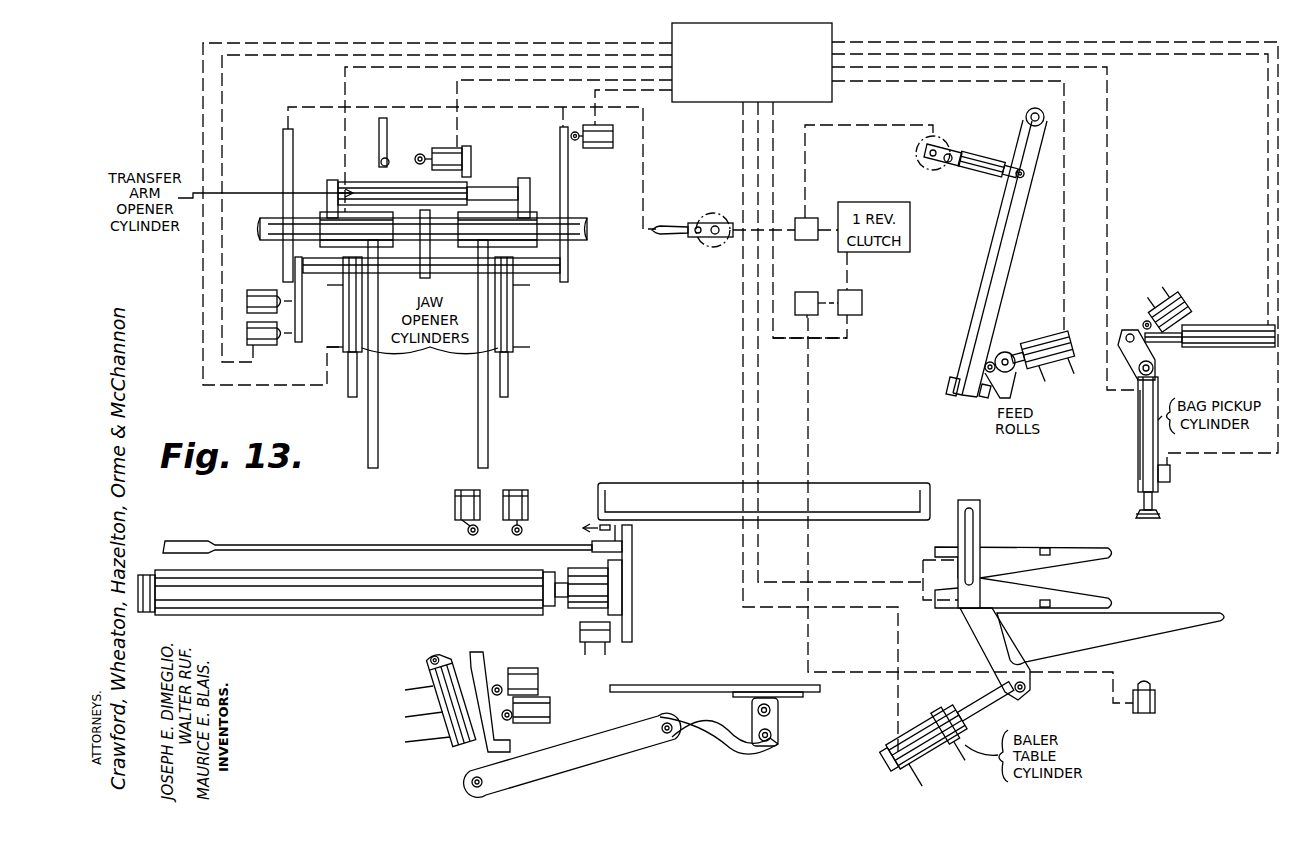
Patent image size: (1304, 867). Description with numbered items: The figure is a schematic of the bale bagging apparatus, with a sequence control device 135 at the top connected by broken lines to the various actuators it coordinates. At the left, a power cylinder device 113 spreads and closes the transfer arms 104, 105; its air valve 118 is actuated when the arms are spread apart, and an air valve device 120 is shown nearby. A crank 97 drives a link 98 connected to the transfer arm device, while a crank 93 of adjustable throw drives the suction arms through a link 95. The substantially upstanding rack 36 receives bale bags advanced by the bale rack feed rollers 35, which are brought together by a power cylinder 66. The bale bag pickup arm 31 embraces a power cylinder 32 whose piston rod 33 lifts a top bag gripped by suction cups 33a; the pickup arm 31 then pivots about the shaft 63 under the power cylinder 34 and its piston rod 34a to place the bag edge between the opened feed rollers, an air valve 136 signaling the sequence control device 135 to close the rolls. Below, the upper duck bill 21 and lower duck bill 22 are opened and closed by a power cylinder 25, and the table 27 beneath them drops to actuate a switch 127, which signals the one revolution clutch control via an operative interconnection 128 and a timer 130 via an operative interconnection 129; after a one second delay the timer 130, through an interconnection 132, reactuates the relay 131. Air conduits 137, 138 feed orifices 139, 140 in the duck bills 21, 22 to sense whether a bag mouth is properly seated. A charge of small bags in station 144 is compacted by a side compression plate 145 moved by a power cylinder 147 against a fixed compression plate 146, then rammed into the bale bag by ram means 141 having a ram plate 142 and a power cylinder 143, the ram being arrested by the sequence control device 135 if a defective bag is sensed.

The sequence control device 135 is at (834, 35).
The power cylinder device 113 is at (355, 178).
The air valve 118 is at (462, 147).
The air valve device 120 is at (615, 181).
The transfer arm 104 is at (378, 433).
The transfer arm 105 is at (488, 433).
The crank 97 is at (718, 232).
The link 98 is at (661, 228).
The timer 130 is at (798, 292).
The relay 131 is at (862, 303).
The interconnection 132 is at (830, 306).
The operative interconnection 128 is at (822, 341).
The operative interconnection 129 is at (810, 634).
The crank 93 is at (946, 149).
The link 95 is at (977, 175).
The rack 36 is at (992, 237).
The bale rack feed rollers 35 is at (1003, 352).
The power cylinder 66 is at (1042, 340).
The power cylinder 34 is at (1228, 325).
The piston rod 34a is at (1172, 346).
The air valve 136 is at (1175, 300).
The shaft 63 is at (1135, 368).
The bale bag pickup arm 31 is at (1136, 433).
The power cylinder 32 is at (1138, 457).
The piston rod 33 is at (1138, 483).
The suction cups 33a is at (1140, 515).
The fixed compression plate 146 is at (690, 514).
The ram means 141 is at (690, 556).
The station 144 is at (730, 576).
The power cylinder 143 is at (333, 618).
The ram plate 142 is at (632, 603).
The side compression plate 145 is at (710, 683).
The power cylinder 147 is at (436, 713).
The upper duck bill 21 is at (1065, 548).
The lower duck bill 22 is at (1087, 592).
The orifice 139 is at (1042, 548).
The orifice 140 is at (1040, 610).
The air conduit 137 is at (993, 553).
The air conduit 138 is at (990, 603).
The table 27 is at (1145, 615).
The power cylinder 25 is at (924, 728).
The switch 127 is at (1155, 700).